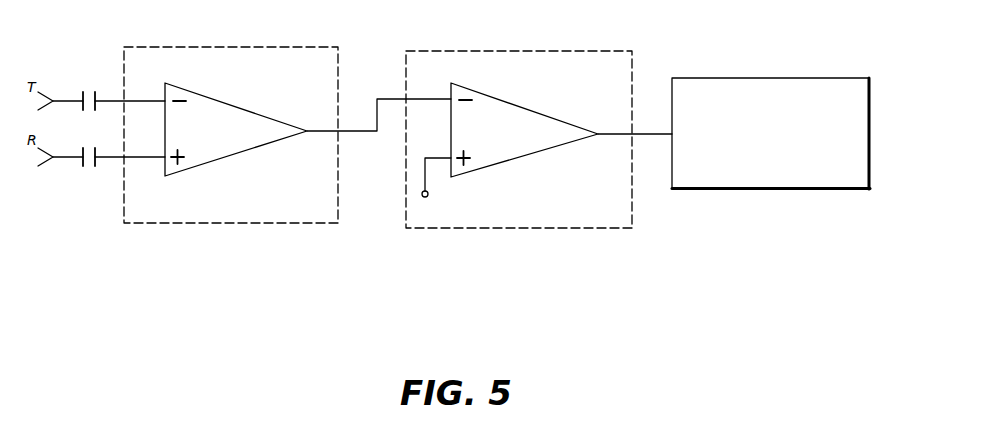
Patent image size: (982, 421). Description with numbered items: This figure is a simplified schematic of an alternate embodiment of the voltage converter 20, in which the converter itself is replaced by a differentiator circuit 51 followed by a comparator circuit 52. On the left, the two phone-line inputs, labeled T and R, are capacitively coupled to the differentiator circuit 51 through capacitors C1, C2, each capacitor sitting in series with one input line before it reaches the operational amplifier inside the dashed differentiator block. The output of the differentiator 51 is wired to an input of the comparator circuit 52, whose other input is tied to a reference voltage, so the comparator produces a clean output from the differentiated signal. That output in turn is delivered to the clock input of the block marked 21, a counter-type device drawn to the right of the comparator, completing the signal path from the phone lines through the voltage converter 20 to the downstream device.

The voltage converter 20 is at (373, 262).
The counter MC14024B 21 is at (748, 190).
The differentiator circuit 51 is at (240, 226).
The comparator circuit 52 is at (535, 230).
The capacitor C1 is at (85, 87).
The capacitor C2 is at (86, 146).